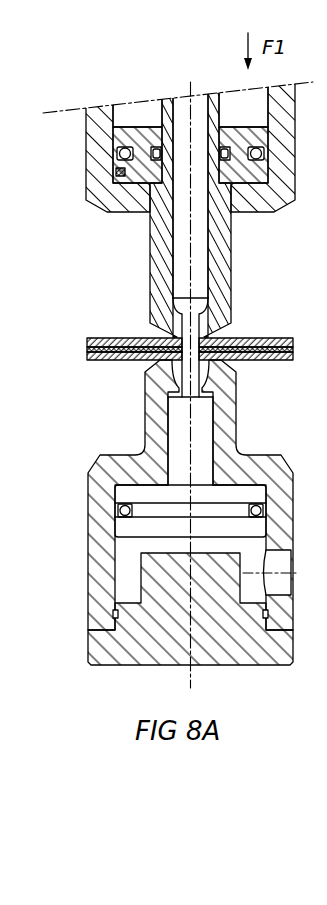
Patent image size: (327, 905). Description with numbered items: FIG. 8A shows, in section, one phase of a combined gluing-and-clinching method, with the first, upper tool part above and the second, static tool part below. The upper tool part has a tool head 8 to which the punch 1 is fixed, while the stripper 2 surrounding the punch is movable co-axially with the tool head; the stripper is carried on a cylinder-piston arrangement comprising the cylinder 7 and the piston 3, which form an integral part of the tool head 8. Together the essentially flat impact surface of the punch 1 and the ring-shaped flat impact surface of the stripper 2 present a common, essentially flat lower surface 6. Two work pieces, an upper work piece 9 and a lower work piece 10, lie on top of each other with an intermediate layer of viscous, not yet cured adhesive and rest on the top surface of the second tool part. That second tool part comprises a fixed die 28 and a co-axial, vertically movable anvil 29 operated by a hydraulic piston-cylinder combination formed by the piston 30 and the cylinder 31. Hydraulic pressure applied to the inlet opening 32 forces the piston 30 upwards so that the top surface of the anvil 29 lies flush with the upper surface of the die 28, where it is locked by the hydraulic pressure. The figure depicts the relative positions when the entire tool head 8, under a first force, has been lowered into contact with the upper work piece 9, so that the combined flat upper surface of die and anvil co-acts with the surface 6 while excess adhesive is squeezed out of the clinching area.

The punch 1 is at (198, 273).
The stripper 2 is at (160, 305).
The piston 3 is at (125, 172).
The lower surface 6 is at (207, 348).
The cylinder 7 is at (253, 117).
The tool head 8 is at (283, 145).
The upper work piece 9 is at (268, 342).
The lower work piece 10 is at (277, 358).
The fixed die 28 is at (230, 420).
The anvil 29 is at (180, 423).
The piston 30 is at (125, 495).
The cylinder 31 is at (125, 557).
The inlet opening 32 is at (280, 563).